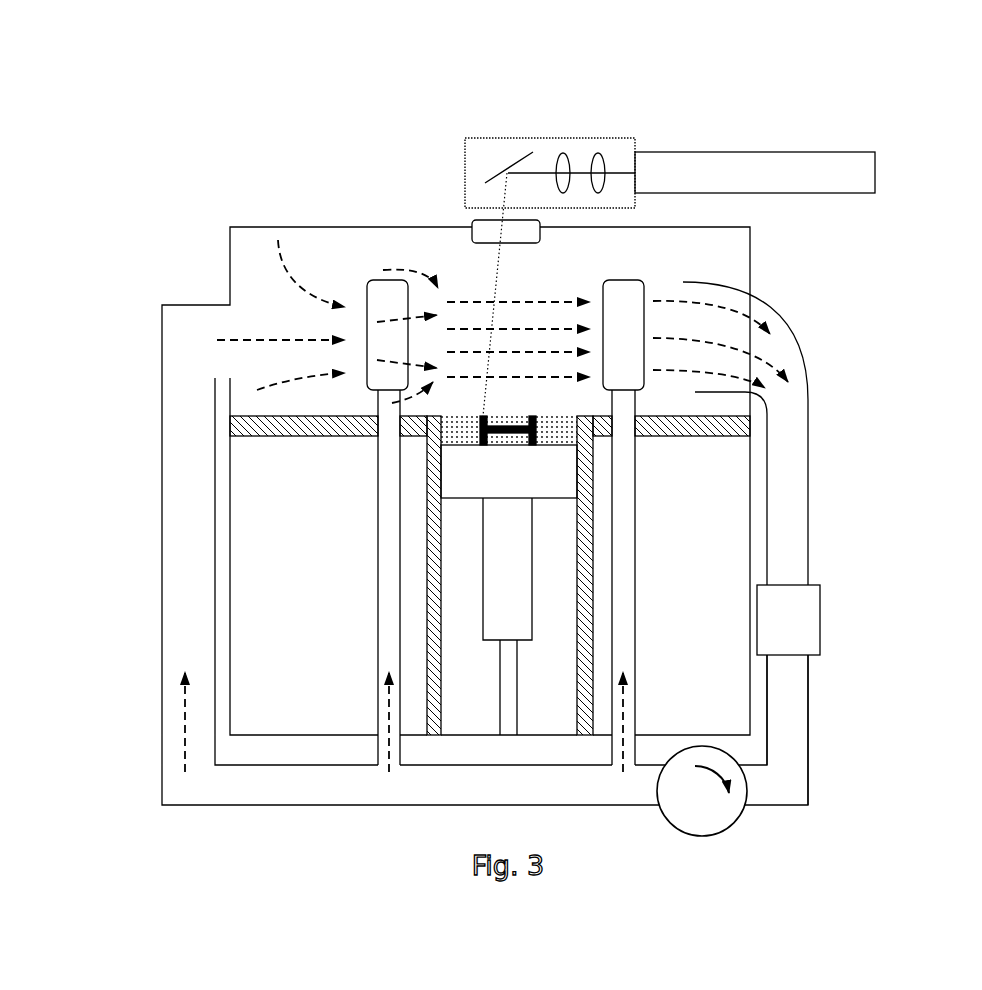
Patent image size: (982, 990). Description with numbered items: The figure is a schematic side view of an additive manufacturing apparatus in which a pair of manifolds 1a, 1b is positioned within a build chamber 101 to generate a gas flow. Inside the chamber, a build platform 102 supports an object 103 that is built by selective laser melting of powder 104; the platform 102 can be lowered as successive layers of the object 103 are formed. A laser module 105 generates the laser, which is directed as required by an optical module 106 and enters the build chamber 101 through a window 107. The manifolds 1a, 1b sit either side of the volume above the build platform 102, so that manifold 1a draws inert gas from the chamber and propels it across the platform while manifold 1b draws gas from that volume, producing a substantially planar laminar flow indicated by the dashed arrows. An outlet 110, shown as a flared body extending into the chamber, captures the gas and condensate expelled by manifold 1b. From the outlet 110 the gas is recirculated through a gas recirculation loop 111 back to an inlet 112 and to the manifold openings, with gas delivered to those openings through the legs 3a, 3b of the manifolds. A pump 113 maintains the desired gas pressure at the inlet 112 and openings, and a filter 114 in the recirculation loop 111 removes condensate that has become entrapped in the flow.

The build chamber 101 is at (230, 263).
The inlet 112 is at (230, 322).
The manifold 1a is at (377, 288).
The manifold 1b is at (635, 298).
The window 107 is at (476, 228).
The optical module 106 is at (565, 137).
The laser module 105 is at (762, 152).
The outlet 110 is at (683, 291).
The powder 104 is at (455, 433).
The object 103 is at (483, 447).
The build platform 102 is at (557, 474).
The leg 3a is at (376, 600).
The leg 3b is at (638, 587).
The filter 114 is at (822, 608).
The gas recirculation loop 111 is at (810, 713).
The pump 113 is at (707, 840).